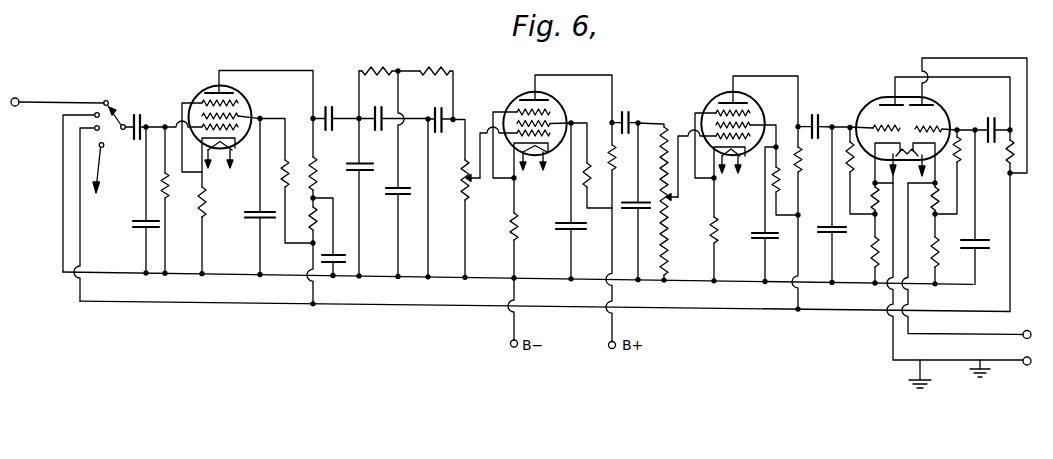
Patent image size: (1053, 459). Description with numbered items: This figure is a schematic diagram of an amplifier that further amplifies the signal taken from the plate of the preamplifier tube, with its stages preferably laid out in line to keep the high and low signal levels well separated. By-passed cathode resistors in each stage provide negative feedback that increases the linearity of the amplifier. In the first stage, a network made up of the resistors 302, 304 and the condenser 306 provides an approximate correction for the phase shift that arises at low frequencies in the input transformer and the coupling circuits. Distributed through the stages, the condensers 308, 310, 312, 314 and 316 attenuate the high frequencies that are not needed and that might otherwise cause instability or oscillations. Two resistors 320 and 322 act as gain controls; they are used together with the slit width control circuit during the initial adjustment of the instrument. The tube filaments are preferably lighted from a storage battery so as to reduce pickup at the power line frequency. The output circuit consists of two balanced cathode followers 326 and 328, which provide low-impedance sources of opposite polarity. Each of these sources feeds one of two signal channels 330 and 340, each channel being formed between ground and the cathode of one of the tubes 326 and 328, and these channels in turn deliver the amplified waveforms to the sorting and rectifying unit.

The resistor 302 is at (317, 160).
The resistor 304 is at (315, 208).
The condenser 306 is at (345, 263).
The condenser 308 is at (137, 220).
The condenser 310 is at (363, 165).
The condenser 312 is at (625, 211).
The condenser 314 is at (837, 234).
The condenser 316 is at (979, 250).
The resistor 320 is at (463, 182).
The resistor 322 is at (670, 200).
The cathode follower 326 is at (876, 101).
The cathode follower 328 is at (944, 106).
The channel 330 is at (980, 336).
The channel 340 is at (922, 377).